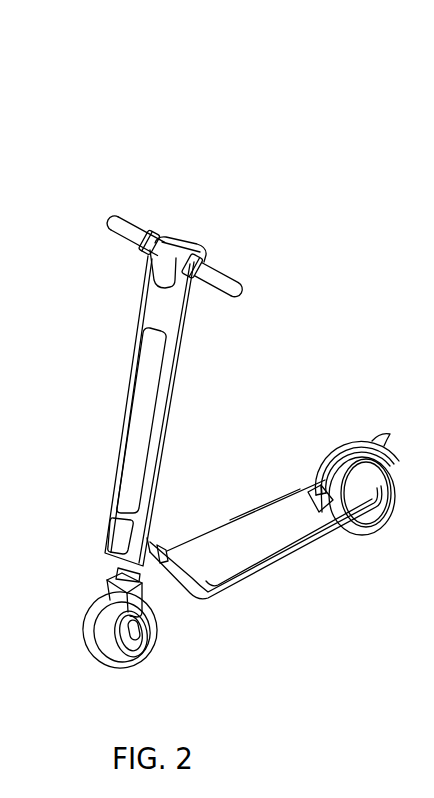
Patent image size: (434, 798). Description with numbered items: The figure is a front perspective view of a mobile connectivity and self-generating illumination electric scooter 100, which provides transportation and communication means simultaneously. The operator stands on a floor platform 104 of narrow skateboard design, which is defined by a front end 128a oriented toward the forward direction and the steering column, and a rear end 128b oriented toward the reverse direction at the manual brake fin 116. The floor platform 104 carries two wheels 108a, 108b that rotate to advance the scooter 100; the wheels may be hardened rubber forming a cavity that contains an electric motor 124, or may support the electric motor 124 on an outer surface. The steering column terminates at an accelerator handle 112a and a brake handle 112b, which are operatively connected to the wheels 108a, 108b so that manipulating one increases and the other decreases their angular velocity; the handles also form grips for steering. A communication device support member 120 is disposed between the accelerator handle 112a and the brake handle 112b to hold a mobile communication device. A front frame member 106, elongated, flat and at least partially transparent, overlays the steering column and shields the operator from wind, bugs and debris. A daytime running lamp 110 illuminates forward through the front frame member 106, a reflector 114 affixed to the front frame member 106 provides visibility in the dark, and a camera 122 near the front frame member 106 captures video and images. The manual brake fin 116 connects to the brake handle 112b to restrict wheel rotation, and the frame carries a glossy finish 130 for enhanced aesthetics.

The mobile connectivity and self-generating illumination electric scooter 100 is at (172, 145).
The floor platform 104 is at (255, 510).
The front frame member 106 is at (175, 377).
The wheel 108a is at (90, 638).
The wheel 108b is at (393, 480).
The daytime running lamp 110 is at (135, 453).
The accelerator handle 112a is at (113, 212).
The brake handle 112b is at (237, 288).
The reflector 114 is at (113, 537).
The manual brake fin 116 is at (360, 440).
The communication device support member 120 is at (184, 243).
The camera 122 is at (162, 270).
The electric motor 124 is at (130, 658).
The front end 128a is at (167, 551).
The rear end 128b is at (352, 503).
The glossy finish 130 is at (275, 546).